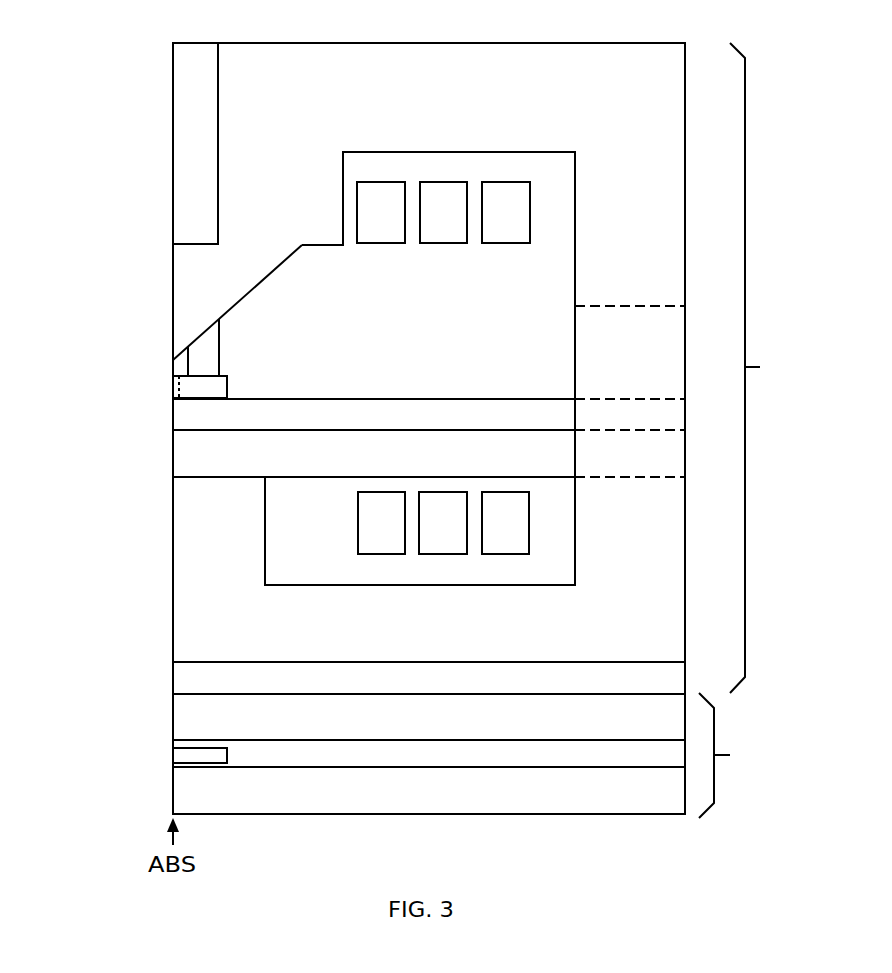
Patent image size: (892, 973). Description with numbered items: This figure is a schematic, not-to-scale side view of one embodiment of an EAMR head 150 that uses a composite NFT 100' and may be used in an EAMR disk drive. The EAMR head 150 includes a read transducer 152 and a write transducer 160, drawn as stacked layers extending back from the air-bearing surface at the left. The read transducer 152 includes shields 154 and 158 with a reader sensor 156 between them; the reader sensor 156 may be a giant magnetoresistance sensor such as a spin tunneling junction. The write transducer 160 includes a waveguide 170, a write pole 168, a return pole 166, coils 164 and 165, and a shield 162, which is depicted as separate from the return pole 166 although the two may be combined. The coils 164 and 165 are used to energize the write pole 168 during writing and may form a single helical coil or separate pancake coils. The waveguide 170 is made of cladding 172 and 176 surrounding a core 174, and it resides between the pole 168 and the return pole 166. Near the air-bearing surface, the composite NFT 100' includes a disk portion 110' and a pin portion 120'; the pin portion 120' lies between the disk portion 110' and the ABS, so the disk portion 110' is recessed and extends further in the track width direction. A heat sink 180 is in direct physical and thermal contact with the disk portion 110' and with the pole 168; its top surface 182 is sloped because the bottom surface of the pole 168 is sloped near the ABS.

The EAMR head 150 is at (438, 22).
The read transducer 152 is at (588, 755).
The shield 154 is at (172, 795).
The reader sensor 156 is at (205, 765).
The shield 158 is at (576, 740).
The write transducer 160 is at (771, 368).
The shield 162 is at (686, 678).
The coil 164 is at (556, 530).
The coil 165 is at (556, 208).
The return pole 166 is at (172, 600).
The write pole 168 is at (686, 150).
The waveguide 170 is at (772, 403).
The cladding 172 is at (172, 470).
The core 174 is at (686, 422).
The cladding 176 is at (686, 376).
The heat sink 180 is at (198, 333).
The top surface 182 is at (203, 310).
The composite NFT 100' is at (104, 411).
The disk portion 110' is at (147, 424).
The pin portion 120' is at (150, 368).